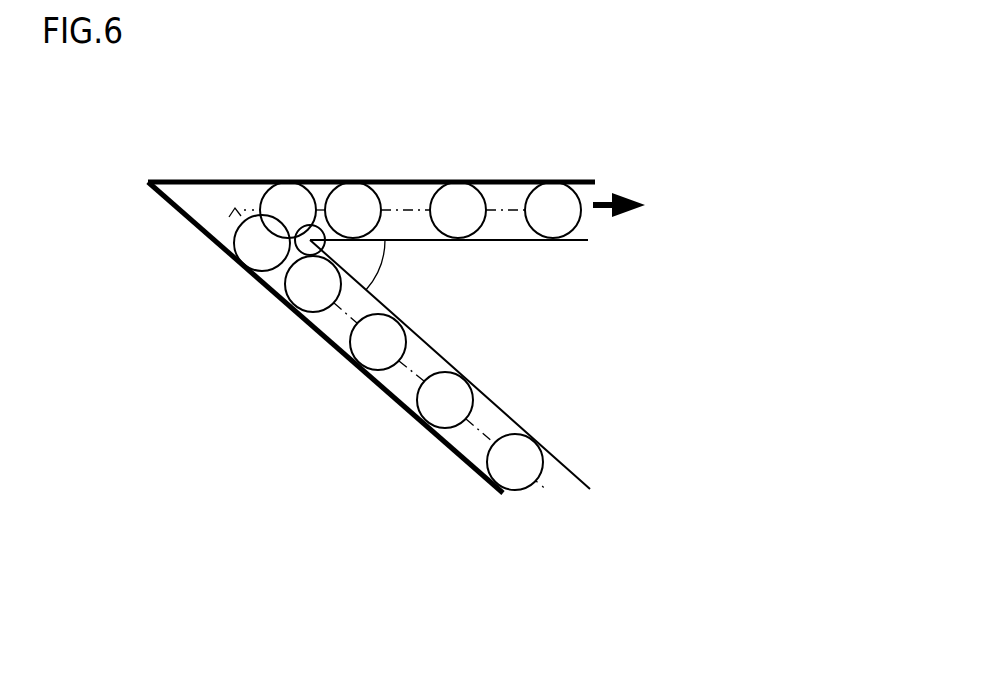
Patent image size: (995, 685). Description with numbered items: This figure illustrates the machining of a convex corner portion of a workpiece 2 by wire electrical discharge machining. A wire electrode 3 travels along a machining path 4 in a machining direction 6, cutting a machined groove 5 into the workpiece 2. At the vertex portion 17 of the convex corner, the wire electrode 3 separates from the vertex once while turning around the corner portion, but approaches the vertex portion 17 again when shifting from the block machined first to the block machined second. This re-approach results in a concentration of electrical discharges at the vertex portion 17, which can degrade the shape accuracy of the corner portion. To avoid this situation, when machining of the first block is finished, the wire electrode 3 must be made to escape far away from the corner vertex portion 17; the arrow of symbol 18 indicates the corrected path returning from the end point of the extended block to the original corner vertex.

The workpiece 2 is at (558, 342).
The wire electrode 3 is at (508, 467).
The machining path 4 is at (477, 428).
The machined groove 5 is at (397, 378).
The machining direction 6 is at (627, 200).
The vertex portion 17 is at (311, 236).
The symbol arrow 18 is at (323, 337).